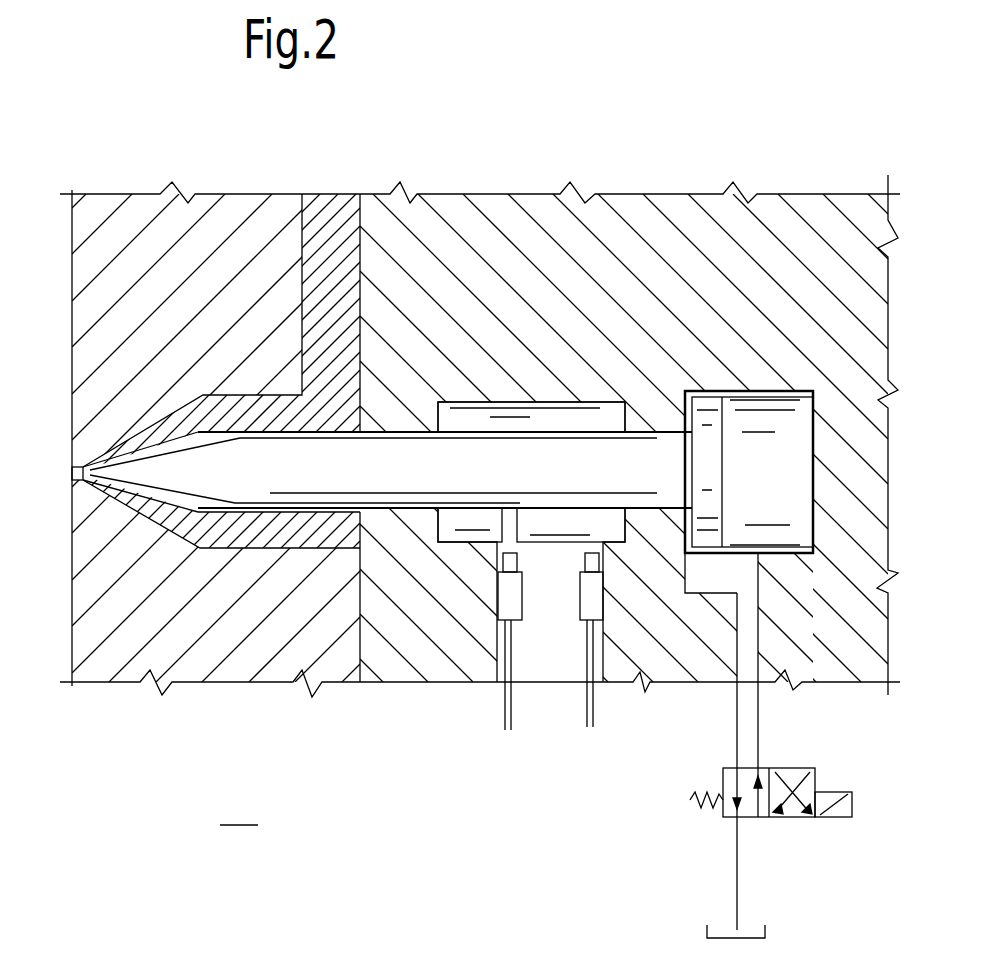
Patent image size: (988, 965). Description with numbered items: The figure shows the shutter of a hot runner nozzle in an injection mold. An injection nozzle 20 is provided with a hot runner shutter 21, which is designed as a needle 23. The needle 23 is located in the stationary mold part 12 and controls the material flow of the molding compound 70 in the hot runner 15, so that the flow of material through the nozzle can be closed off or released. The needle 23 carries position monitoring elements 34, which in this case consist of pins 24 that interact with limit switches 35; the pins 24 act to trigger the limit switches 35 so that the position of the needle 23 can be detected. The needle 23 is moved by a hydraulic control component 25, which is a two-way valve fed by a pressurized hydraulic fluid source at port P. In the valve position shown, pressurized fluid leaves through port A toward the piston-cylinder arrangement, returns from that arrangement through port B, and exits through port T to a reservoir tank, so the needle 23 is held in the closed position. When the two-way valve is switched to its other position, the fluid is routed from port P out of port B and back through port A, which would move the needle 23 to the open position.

The stationary mold part 12 is at (205, 240).
The hot runner 15 is at (320, 230).
The molding compound 70 is at (355, 268).
The needle 23 is at (410, 432).
The hot runner shutter 21 is at (190, 450).
The injection nozzle 20 is at (72, 467).
The pins 24 is at (526, 546).
The limit switches 35 is at (513, 607).
The position monitoring elements 34 is at (480, 501).
The hydraulic control component 25 is at (803, 802).